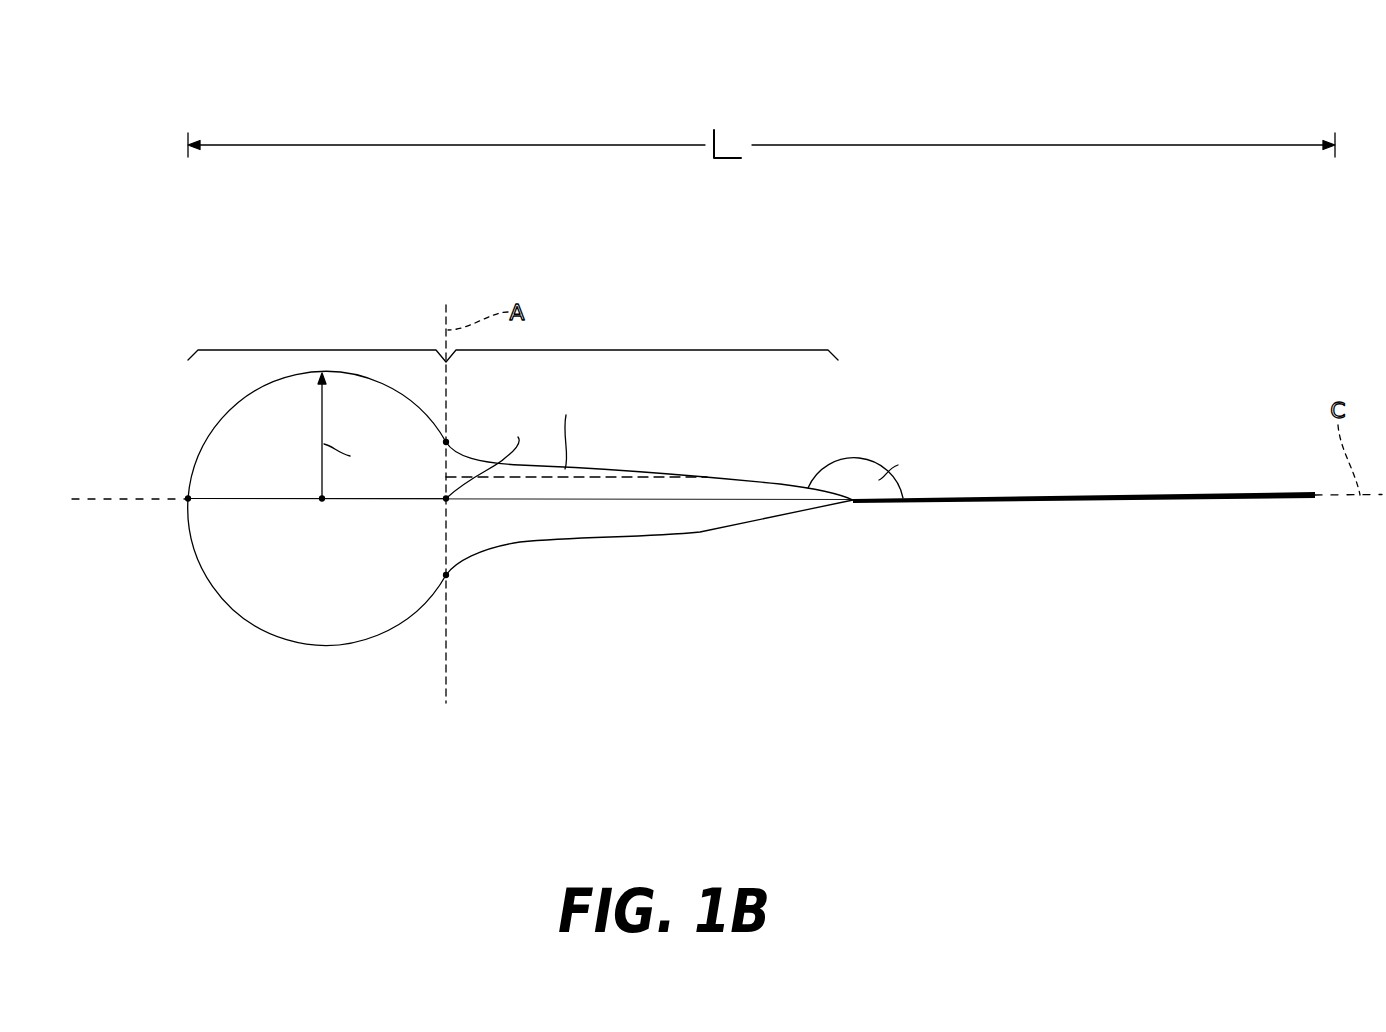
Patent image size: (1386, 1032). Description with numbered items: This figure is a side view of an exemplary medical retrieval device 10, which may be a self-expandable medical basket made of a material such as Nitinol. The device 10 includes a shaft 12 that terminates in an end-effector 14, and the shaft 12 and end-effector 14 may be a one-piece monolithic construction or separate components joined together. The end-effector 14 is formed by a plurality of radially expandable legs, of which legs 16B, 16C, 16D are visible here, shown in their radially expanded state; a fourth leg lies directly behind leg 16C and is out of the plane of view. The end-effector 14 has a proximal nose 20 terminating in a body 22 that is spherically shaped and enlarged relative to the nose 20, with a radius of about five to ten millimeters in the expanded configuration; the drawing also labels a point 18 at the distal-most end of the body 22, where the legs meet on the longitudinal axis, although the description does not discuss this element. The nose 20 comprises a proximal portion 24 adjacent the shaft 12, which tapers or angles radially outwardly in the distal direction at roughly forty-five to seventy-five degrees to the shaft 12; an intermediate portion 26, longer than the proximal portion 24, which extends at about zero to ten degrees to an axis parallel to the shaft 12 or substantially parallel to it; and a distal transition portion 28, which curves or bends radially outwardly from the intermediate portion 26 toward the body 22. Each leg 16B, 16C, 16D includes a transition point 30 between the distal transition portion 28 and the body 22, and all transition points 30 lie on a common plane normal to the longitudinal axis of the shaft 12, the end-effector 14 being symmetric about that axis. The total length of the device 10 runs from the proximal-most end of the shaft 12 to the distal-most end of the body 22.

The medical retrieval device 10 is at (1008, 104).
The shaft 12 is at (1128, 495).
The end-effector 14 is at (414, 266).
The leg 16B is at (218, 420).
The leg 16C is at (248, 500).
The leg 16D is at (230, 612).
The distal end point 18 is at (188, 497).
The proximal nose 20 is at (681, 474).
The body 22 is at (290, 474).
The proximal portion 24 is at (778, 482).
The intermediate portion 26 is at (597, 540).
The distal transition portion 28 is at (506, 558).
The transition point 30 is at (447, 441).